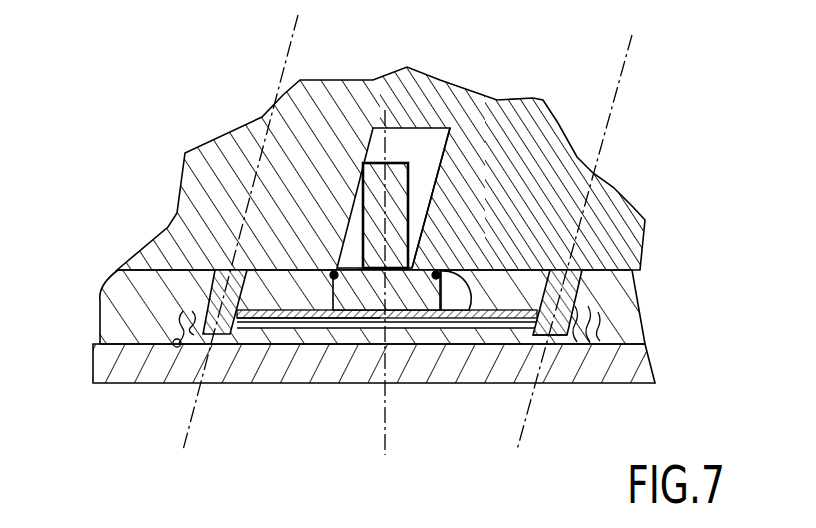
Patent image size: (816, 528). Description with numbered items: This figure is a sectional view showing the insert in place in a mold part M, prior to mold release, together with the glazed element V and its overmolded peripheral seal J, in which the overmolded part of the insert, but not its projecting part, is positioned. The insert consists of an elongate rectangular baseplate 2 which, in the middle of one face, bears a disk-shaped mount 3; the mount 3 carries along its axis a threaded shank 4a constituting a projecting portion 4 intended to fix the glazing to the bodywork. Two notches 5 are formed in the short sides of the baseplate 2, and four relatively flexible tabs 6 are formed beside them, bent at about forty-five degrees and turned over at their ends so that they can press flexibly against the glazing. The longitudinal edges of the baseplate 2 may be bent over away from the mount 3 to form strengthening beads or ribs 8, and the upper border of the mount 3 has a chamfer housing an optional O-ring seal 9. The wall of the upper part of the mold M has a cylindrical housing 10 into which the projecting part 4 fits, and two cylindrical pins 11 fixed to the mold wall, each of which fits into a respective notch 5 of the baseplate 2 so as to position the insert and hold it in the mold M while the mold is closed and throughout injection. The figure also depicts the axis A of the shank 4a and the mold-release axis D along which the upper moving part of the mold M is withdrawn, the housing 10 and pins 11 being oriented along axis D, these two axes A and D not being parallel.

The baseplate 2 is at (278, 320).
The mount 3 is at (345, 325).
The projecting portion 4 is at (365, 160).
The shank 4a is at (411, 183).
The notch 5 is at (537, 335).
The flexible tab 6 is at (180, 345).
The strengthening bead or rib 8 is at (443, 327).
The O-ring seal 9 is at (467, 312).
The cylindrical housing 10 is at (416, 128).
The cylindrical pin 11 is at (196, 268).
The mold part M is at (500, 137).
The overmolded peripheral seal J is at (610, 310).
The glazed element V is at (648, 363).
The mold-release axis D is at (625, 65).
The axis of the shank A is at (385, 425).